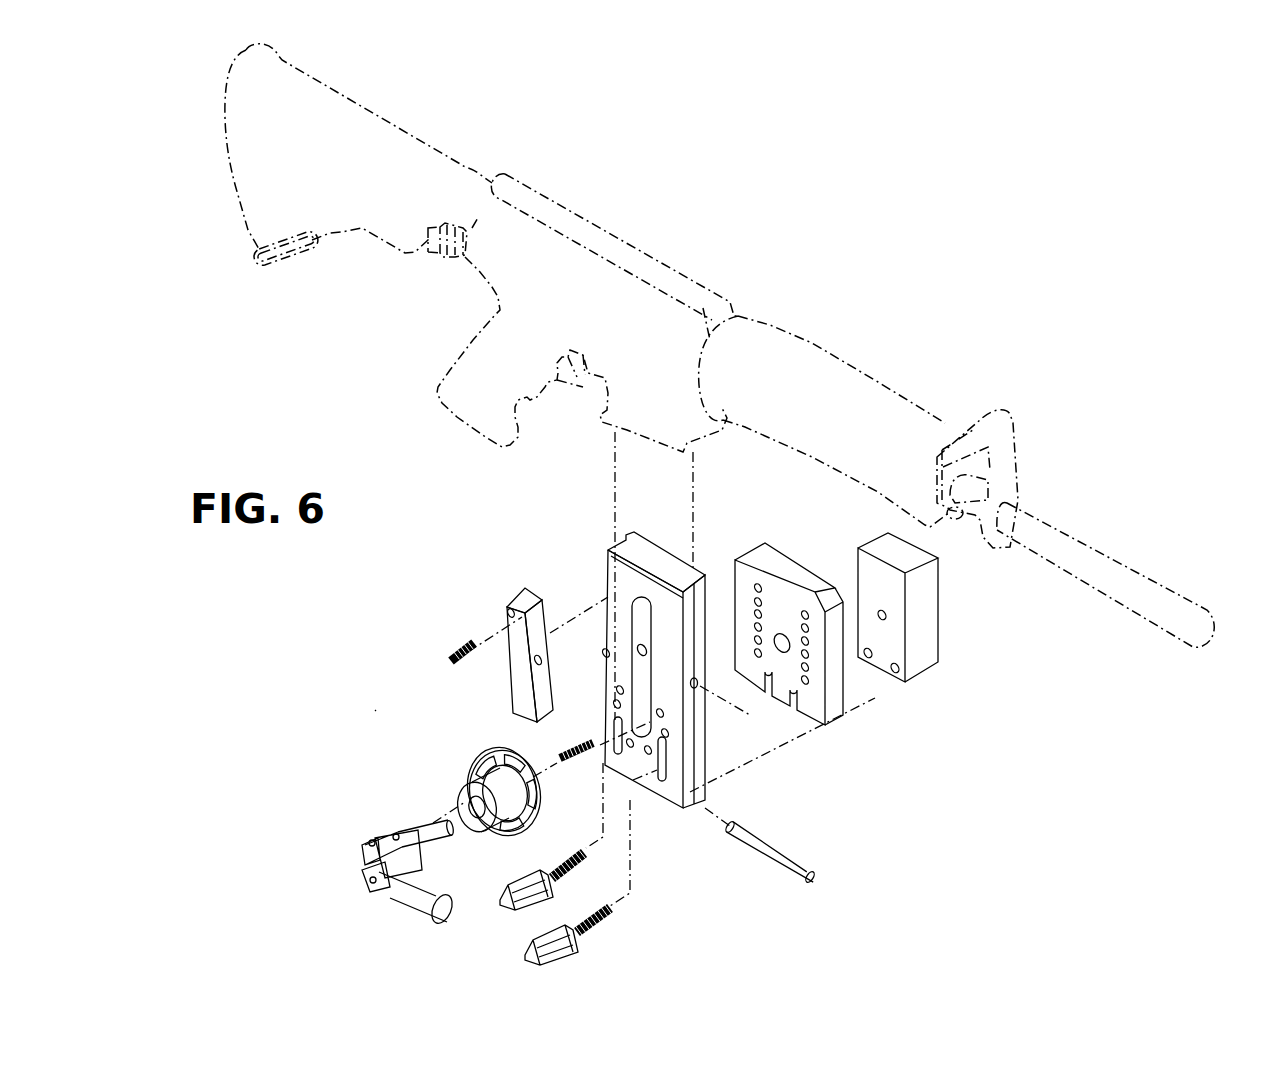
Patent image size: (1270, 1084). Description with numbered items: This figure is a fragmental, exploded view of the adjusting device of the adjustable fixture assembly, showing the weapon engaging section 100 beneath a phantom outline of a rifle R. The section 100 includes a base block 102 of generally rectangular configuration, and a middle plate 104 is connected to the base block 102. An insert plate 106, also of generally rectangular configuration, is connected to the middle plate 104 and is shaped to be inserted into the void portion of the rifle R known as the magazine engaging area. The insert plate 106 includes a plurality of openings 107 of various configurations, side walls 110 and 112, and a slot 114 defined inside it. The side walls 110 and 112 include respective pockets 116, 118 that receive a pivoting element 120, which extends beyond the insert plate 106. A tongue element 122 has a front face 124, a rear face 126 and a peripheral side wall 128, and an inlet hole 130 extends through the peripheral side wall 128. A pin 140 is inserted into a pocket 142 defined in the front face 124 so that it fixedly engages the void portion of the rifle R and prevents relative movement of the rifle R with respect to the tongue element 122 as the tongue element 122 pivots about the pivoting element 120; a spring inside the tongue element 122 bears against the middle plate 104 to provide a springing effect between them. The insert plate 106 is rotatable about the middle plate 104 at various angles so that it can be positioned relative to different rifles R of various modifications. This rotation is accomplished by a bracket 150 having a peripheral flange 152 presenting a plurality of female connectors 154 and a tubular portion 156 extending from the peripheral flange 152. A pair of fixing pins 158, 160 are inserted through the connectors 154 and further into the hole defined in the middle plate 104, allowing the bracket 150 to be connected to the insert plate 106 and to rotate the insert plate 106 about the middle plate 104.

The rifle R is at (797, 350).
The weapon engaging section 100 is at (366, 713).
The base block 102 is at (922, 637).
The middle plate 104 is at (817, 703).
The insert plate 106 is at (668, 668).
The openings 107 is at (617, 717).
The side wall 110 is at (608, 556).
The side wall 112 is at (697, 773).
The slot 114 is at (647, 690).
The pocket 116 is at (698, 686).
The pocket 118 is at (643, 648).
The pivoting element 120 is at (783, 858).
The tongue element 122 is at (508, 635).
The front face 124 is at (510, 660).
The rear face 126 is at (556, 672).
The peripheral side wall 128 is at (543, 617).
The inlet hole 130 is at (538, 665).
The pin 140 is at (455, 652).
The pocket 142 is at (507, 610).
The bracket 150 is at (473, 825).
The peripheral flange 152 is at (538, 815).
The female connectors 154 is at (505, 763).
The tubular portion 156 is at (511, 836).
The fixing pin 158 is at (594, 930).
The fixing pin 160 is at (565, 870).